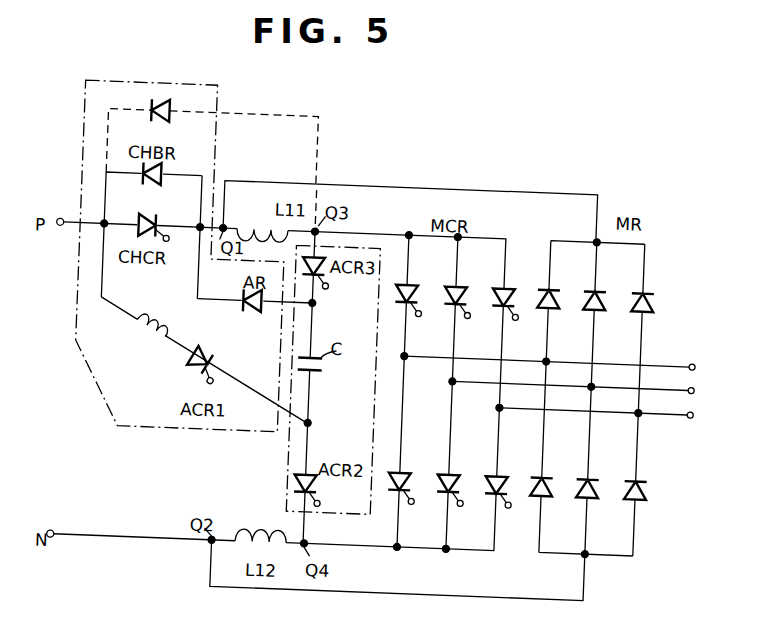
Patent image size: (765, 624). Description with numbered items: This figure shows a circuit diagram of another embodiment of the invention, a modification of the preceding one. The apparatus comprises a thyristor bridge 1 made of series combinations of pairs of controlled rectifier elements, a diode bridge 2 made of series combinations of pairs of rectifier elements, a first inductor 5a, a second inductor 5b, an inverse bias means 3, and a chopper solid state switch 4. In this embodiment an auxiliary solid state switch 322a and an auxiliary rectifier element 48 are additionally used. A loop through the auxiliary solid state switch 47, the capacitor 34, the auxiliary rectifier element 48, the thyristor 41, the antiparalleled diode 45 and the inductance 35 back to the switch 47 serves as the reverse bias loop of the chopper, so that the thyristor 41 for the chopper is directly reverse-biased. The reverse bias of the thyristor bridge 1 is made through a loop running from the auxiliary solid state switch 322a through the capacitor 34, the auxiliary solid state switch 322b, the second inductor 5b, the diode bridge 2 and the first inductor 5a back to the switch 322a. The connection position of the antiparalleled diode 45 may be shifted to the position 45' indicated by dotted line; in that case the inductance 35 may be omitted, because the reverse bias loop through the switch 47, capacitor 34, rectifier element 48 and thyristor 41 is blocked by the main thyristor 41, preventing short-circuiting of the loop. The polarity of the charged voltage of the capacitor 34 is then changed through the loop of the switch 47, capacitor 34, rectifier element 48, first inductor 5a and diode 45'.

The thyristor bridge 1 is at (436, 177).
The diode bridge 2 is at (600, 164).
The inverse bias means 3 is at (366, 246).
The solid state switch 4 is at (214, 152).
The first inductor 5a is at (258, 224).
The second inductor 5b is at (261, 525).
The capacitor 34 is at (327, 372).
The inductance 35 is at (169, 339).
The thyristor for chopper 41 is at (150, 222).
The antiparalleled diode 45 is at (140, 187).
The shifted position of antiparalleled diode 45' is at (147, 85).
The auxiliary solid state switch 47 is at (213, 386).
The auxiliary rectifier element 48 is at (248, 314).
The auxiliary solid state switch 322a is at (330, 288).
The auxiliary solid state switch 322b is at (307, 486).